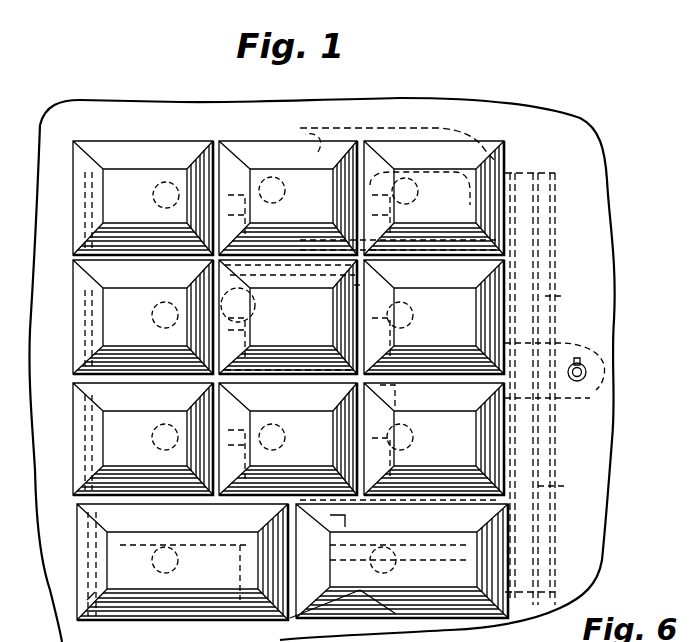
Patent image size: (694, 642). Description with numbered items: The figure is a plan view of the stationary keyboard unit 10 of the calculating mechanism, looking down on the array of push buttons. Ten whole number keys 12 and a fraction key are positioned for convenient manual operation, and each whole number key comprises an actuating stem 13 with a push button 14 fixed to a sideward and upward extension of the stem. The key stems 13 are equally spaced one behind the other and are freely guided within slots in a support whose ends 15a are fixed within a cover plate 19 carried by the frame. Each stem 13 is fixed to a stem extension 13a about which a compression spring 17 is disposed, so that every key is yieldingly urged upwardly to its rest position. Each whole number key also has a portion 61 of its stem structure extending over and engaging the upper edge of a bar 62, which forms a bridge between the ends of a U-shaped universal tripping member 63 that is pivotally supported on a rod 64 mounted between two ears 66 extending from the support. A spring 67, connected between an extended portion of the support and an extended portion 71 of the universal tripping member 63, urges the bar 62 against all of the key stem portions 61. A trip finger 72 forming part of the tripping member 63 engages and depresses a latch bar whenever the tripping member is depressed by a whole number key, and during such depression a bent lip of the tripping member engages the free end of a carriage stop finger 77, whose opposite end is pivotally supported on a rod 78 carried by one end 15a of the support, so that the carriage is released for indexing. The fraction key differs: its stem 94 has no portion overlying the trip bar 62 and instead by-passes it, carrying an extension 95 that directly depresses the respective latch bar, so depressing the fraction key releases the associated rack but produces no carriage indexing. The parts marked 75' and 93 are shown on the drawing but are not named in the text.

The stationary keyboard unit 10 is at (188, 620).
The whole number key 12 is at (74, 568).
The actuating stem 13 is at (278, 440).
The stem extension 13a is at (444, 535).
The push button 14 is at (540, 622).
The support end 15a is at (556, 296).
The compression spring 17 is at (388, 547).
The cover plate 19 is at (605, 447).
The stem portion 61 is at (372, 388).
The bar 62 is at (312, 146).
The universal tripping member 63 is at (445, 128).
The rod 64 is at (565, 486).
The ear 66 is at (530, 593).
The spring 67 is at (583, 365).
The extended portion of the universal tripping member 71 is at (590, 398).
The trip finger 72 is at (311, 555).
The conductor 75' is at (299, 631).
The carriage stop finger 77 is at (300, 600).
The rod 78 is at (88, 601).
The conductor 93 is at (402, 618).
The fraction key stem 94 is at (360, 284).
The extension 95 is at (338, 523).